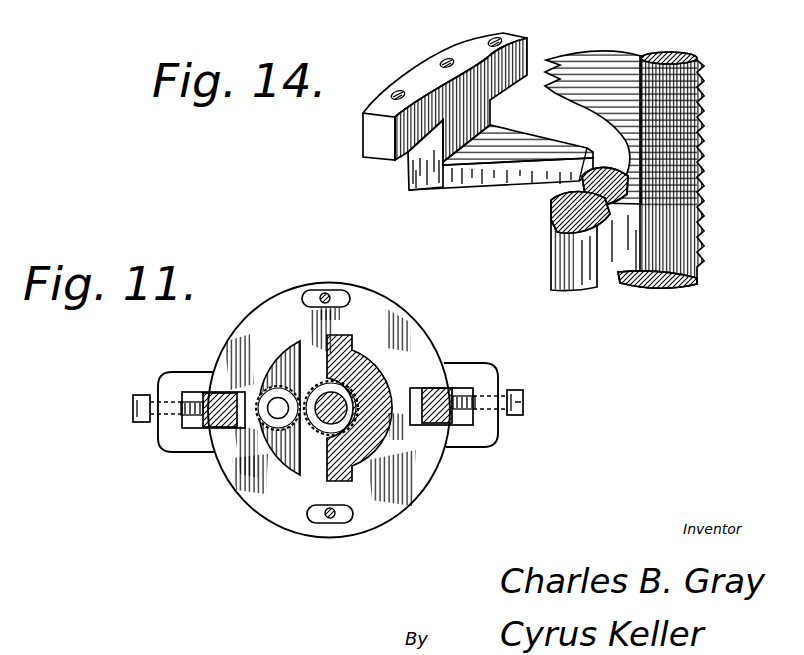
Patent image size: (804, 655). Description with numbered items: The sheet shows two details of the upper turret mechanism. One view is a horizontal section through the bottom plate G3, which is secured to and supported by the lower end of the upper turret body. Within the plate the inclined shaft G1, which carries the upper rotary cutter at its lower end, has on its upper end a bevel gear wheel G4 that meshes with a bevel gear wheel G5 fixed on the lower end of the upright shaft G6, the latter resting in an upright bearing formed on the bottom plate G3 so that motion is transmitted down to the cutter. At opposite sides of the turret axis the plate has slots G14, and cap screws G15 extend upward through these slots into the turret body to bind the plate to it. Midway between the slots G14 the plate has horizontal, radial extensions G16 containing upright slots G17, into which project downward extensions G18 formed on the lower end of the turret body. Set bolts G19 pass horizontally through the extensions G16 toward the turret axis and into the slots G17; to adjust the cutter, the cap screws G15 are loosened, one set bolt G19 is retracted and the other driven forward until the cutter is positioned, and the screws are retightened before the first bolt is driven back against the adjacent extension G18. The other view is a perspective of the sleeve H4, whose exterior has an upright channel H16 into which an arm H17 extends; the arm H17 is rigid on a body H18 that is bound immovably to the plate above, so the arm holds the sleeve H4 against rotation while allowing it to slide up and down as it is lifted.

In FIG. 14, the sleeve H4 is at (613, 247).
In FIG. 14, the upright channel H16 is at (553, 198).
In FIG. 14, the arm H17 is at (481, 182).
In FIG. 14, the body H18 is at (412, 184).
In FIG. 11, the inclined shaft G1 is at (272, 412).
In FIG. 11, the bottom plate G3 is at (252, 489).
In FIG. 11, the bevel gear wheel G4 is at (280, 426).
In FIG. 11, the bevel gear wheel G5 is at (333, 414).
In FIG. 11, the upright shaft G6 is at (313, 430).
In FIG. 11, the slots G14 is at (310, 298).
In FIG. 11, the cap screws G15 is at (325, 296).
In FIG. 11, the radial extensions G16 is at (173, 425).
In FIG. 11, the upright slots G17 is at (194, 398).
In FIG. 11, the downward extensions G18 is at (208, 394).
In FIG. 11, the set bolts G19 is at (133, 402).